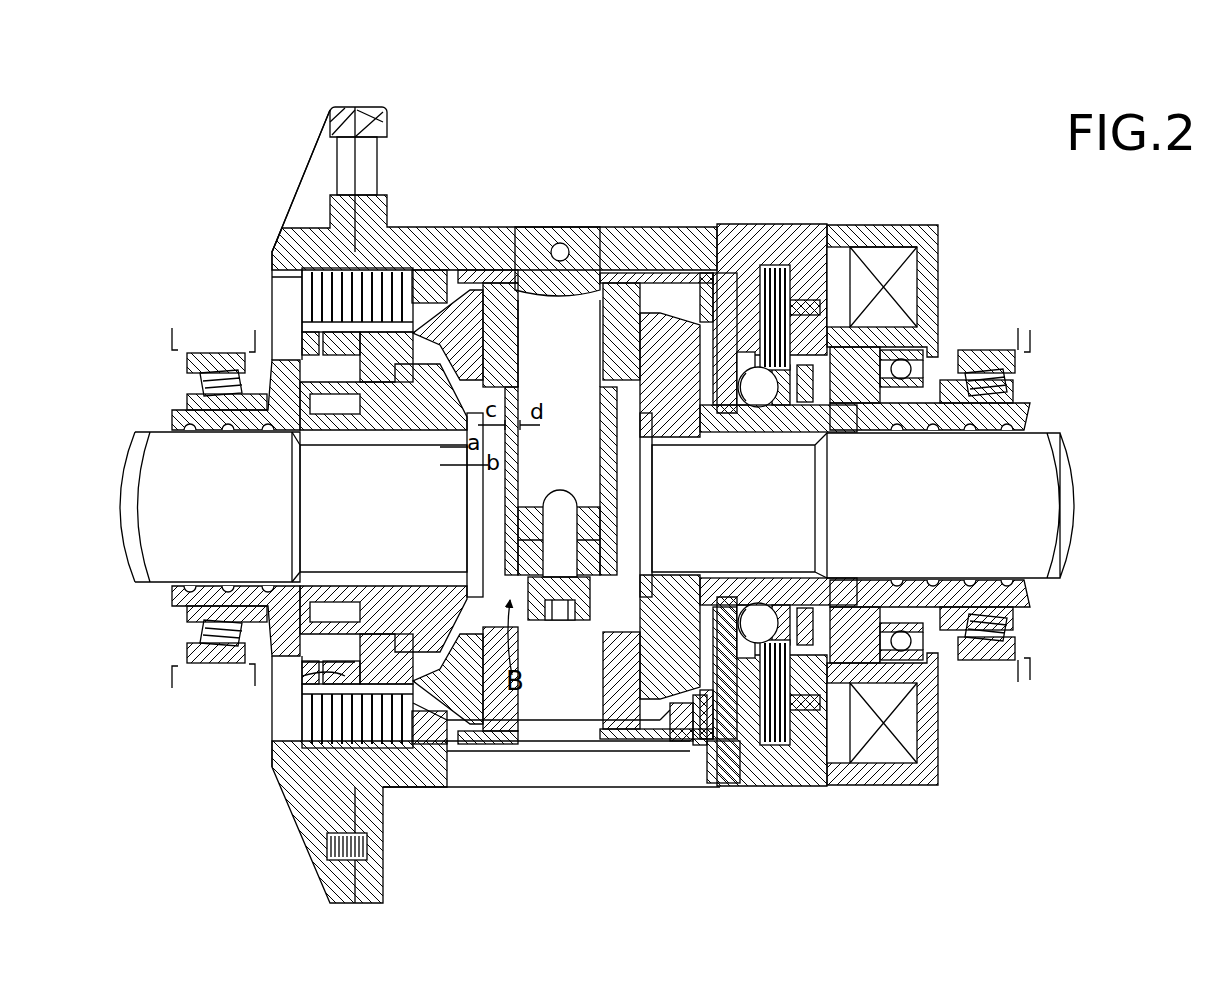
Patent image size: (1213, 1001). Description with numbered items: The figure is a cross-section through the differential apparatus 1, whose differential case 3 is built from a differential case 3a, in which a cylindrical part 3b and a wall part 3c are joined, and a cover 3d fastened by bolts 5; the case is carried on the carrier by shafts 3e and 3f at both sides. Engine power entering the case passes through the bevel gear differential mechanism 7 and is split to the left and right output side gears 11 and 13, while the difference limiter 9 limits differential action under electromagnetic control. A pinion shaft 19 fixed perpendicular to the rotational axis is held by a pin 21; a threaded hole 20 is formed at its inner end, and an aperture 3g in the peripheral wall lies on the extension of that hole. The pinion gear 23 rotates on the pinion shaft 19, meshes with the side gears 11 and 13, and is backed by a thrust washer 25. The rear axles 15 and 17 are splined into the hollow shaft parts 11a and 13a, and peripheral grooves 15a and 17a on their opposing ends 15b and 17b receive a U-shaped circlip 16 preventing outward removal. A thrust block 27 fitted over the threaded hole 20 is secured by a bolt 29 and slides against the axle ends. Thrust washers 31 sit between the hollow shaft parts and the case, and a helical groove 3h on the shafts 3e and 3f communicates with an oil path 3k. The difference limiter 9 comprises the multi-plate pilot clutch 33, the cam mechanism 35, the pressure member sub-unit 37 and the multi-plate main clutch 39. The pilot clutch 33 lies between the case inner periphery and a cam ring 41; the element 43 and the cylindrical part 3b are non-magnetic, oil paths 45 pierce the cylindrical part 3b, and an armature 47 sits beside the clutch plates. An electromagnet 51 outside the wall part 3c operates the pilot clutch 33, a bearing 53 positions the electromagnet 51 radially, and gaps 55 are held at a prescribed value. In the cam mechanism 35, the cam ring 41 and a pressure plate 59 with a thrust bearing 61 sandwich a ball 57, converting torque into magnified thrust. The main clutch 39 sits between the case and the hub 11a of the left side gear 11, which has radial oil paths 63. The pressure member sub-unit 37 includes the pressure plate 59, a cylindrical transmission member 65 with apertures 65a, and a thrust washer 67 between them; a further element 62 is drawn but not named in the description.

The differential apparatus 1 is at (943, 198).
The differential case 3 is at (355, 107).
The differential case body 3a is at (470, 228).
The cylindrical part 3b is at (797, 228).
The wall part 3c is at (822, 233).
The cover 3d is at (345, 225).
The shaft (boss) 3e is at (205, 385).
The shaft (boss) 3f is at (1010, 372).
The aperture 3g is at (712, 760).
The helical groove 3h is at (190, 432).
The oil path 3k is at (905, 332).
The bolts 5 is at (383, 855).
The bevel gear differential mechanism 7 is at (565, 708).
The difference limiter 9 is at (290, 712).
The left output side gear 11 is at (470, 690).
The hollow shaft part (hub) 11a is at (393, 567).
The right output side gear 13 is at (655, 655).
The hollow shaft part 13a is at (722, 592).
The left rear axle 15 is at (268, 518).
The peripheral groove 15a is at (468, 452).
The opposing end 15b is at (503, 472).
The circlip 16 is at (470, 560).
The right rear axle 17 is at (930, 512).
The peripheral groove 17a is at (645, 456).
The opposing end 17b is at (638, 480).
The pinion shaft 19 is at (580, 370).
The threaded hole 20 is at (563, 490).
The pin (pin insertion hole) 21 is at (558, 243).
The pinion gear 23 is at (625, 272).
The thrust washer 25 is at (487, 268).
The thrust block 27 is at (598, 588).
The bolt 29 is at (540, 618).
The thrust washers 31 is at (338, 582).
The multi-plate pilot clutch 33 is at (800, 795).
The cam mechanism 35 is at (740, 437).
The pressure member sub-unit 37 is at (668, 207).
The multi-plate main clutch 39 is at (420, 797).
The cam ring 41 is at (797, 432).
The non-magnetic element 43 is at (920, 715).
The oil paths 45 is at (752, 748).
The armature 47 is at (750, 262).
The electromagnet 51 is at (945, 760).
The bearing 53 is at (928, 620).
The gaps 55 is at (960, 668).
The ball 57 is at (758, 388).
The pressure plate 59 is at (755, 597).
The thrust bearing 61 is at (790, 600).
The spacer 62 is at (855, 578).
The oil paths 63 is at (302, 676).
The cylindrical transmission member 65 is at (440, 765).
The apertures 65a is at (670, 740).
The thrust washer 67 is at (700, 760).